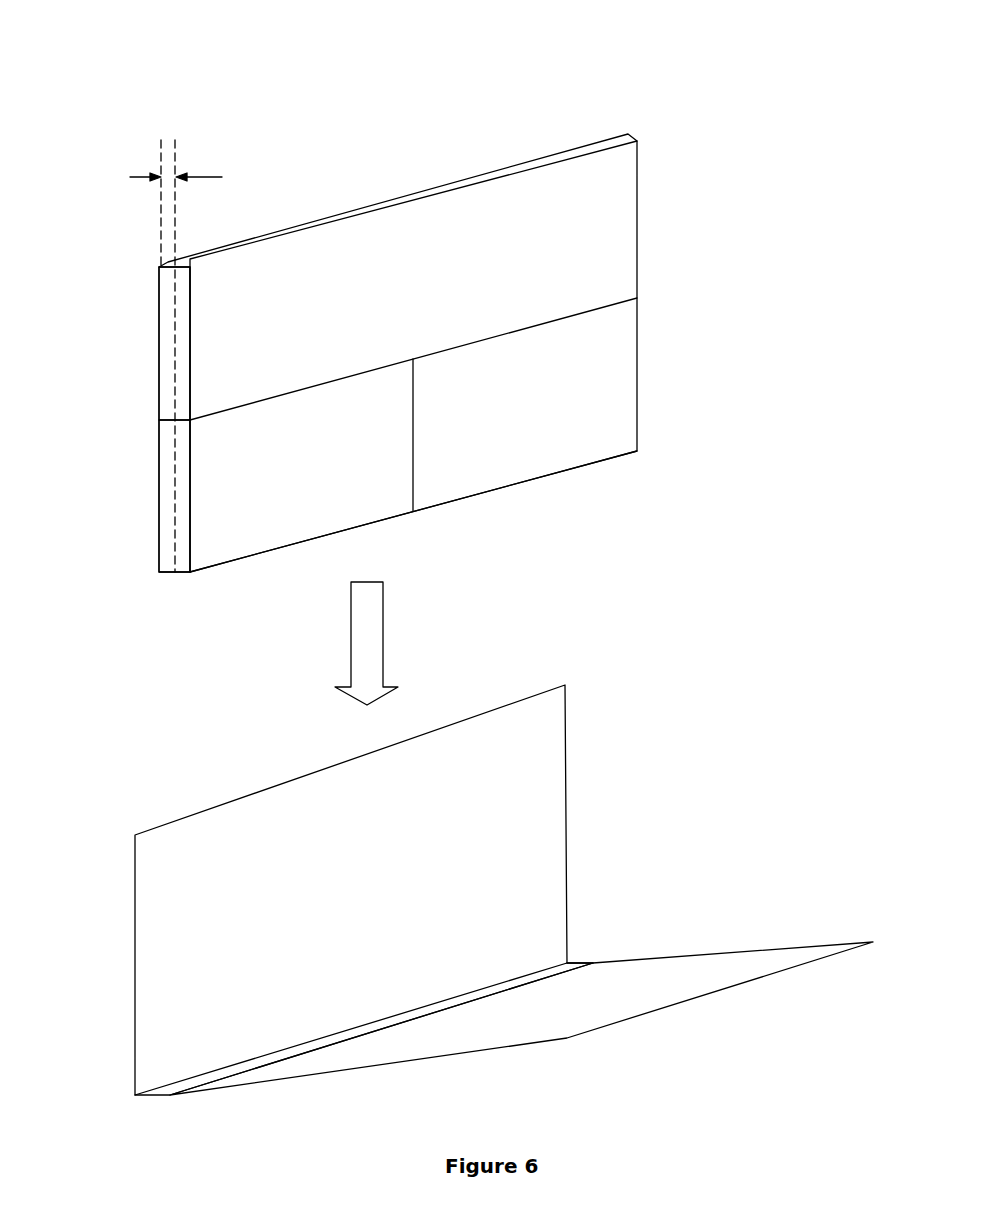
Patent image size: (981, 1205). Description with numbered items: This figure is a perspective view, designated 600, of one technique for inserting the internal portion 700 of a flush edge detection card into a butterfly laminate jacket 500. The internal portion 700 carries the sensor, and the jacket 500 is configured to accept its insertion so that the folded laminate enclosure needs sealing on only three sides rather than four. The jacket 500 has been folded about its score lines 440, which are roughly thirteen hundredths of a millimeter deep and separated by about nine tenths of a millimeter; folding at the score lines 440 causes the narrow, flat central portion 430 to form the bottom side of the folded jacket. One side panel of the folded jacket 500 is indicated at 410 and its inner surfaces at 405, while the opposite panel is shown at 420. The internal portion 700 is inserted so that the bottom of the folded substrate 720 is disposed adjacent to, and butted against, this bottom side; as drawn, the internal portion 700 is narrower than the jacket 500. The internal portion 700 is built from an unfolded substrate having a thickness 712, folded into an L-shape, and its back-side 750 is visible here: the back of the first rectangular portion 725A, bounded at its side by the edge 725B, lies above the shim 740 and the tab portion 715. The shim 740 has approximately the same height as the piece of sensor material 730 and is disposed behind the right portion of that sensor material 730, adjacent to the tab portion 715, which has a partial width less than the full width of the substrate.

The assembly 600 is at (685, 84).
The internal portion 700 is at (357, 180).
The thickness 712 is at (168, 174).
The first rectangular portion 725A is at (603, 230).
The side edge surface 725B is at (168, 340).
The sensor material 730 is at (163, 470).
The back-side 750 is at (535, 285).
The shim 740 is at (610, 383).
The tab portion 715 is at (338, 477).
The folded substrate 720 is at (284, 560).
The butterfly laminate jacket 500 is at (614, 789).
The vertical panel 410 is at (177, 885).
The surface 405 is at (341, 901).
The base 420 is at (488, 1035).
The central portion 430 is at (580, 963).
The score lines 440 is at (210, 1087).